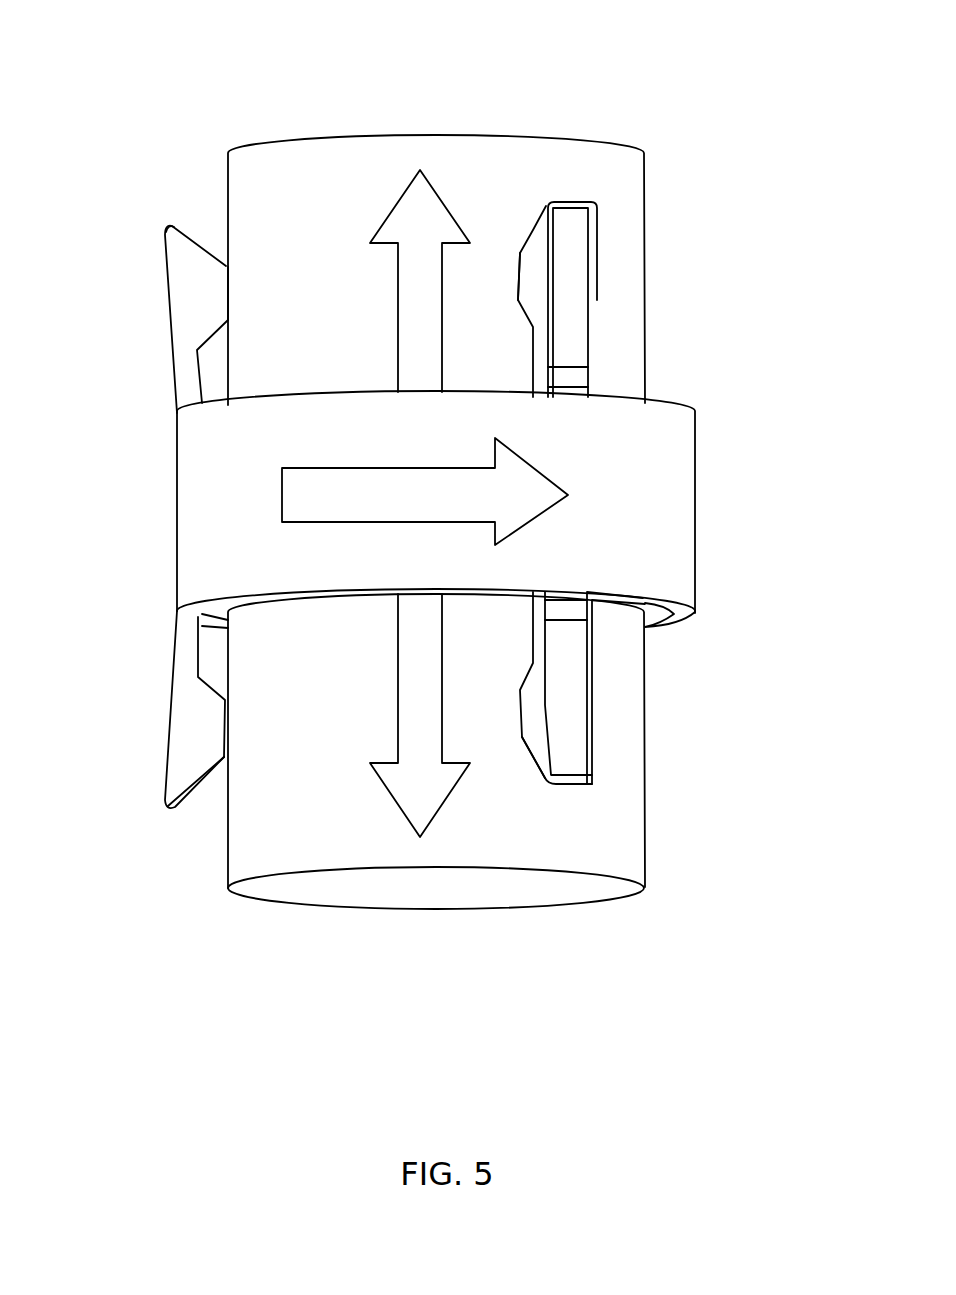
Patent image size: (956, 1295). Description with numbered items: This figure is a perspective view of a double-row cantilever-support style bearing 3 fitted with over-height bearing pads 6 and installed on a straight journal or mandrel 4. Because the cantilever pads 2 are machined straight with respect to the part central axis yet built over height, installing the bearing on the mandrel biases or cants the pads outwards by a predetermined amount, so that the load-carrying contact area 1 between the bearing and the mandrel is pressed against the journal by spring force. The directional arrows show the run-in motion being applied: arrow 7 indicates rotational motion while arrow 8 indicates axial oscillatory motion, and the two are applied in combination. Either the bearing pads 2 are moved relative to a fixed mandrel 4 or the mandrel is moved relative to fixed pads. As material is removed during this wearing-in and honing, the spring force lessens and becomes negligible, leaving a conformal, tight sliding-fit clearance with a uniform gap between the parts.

The contact area 1 is at (223, 267).
The cantilever pads 2 is at (188, 293).
The bearing 3 is at (663, 455).
The mandrel 4 is at (318, 805).
The over-height bearing pad 6 is at (187, 265).
The arrow showing rotational motion 7 is at (518, 485).
The arrow showing axial oscillatory motion 8 is at (410, 217).